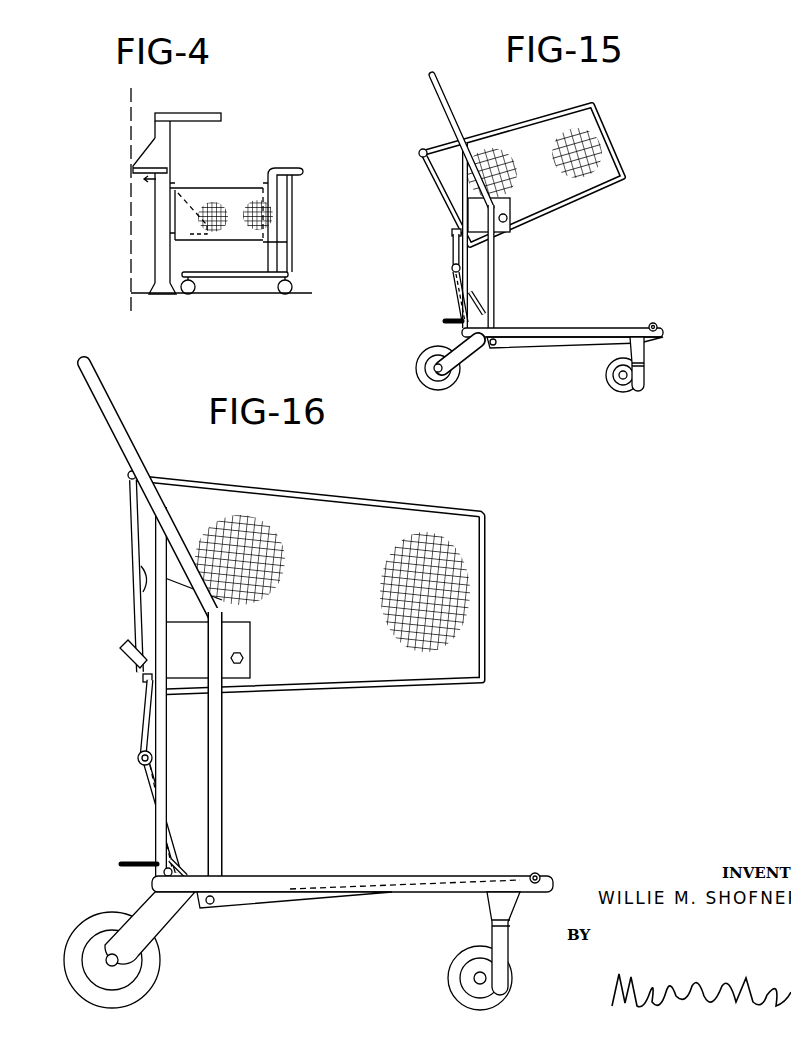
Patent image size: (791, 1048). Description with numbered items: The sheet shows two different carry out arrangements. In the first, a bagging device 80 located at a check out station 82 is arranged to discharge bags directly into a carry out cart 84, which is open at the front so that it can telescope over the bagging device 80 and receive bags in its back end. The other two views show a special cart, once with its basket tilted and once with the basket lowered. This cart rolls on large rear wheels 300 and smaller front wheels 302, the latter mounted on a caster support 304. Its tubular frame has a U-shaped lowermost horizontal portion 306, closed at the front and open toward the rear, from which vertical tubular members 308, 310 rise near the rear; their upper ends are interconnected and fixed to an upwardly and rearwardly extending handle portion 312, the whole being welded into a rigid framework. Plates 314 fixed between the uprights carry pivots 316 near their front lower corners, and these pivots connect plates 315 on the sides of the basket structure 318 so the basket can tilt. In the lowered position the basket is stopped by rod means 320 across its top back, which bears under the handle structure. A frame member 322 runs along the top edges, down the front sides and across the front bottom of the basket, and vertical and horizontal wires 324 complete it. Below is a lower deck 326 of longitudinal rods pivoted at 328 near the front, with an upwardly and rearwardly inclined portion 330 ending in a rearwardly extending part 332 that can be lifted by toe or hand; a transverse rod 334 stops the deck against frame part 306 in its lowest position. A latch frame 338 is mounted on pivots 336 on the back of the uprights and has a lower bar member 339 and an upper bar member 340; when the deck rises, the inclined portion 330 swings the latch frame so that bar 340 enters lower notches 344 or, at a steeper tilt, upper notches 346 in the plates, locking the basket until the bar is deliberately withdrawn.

In FIG. 4, the bagging device 80 is at (170, 184).
In FIG. 4, the check out station 82 is at (221, 92).
In FIG. 4, the carry out cart 84 is at (229, 190).
In FIG. 15, the rear wheels 300 is at (448, 389).
In FIG. 16, the rear wheels 300 is at (150, 973).
In FIG. 15, the front wheels 302 is at (620, 392).
In FIG. 16, the front wheels 302 is at (455, 976).
In FIG. 15, the caster support 304 is at (641, 368).
In FIG. 16, the caster support 304 is at (492, 936).
In FIG. 15, the lowermost horizontal portion 306 is at (560, 328).
In FIG. 16, the lowermost horizontal portion 306 is at (338, 877).
In FIG. 15, the vertical tubular member 308 is at (470, 258).
In FIG. 16, the vertical tubular member 308 is at (168, 737).
In FIG. 15, the vertical tubular member 310 is at (497, 280).
In FIG. 16, the vertical tubular member 310 is at (223, 779).
In FIG. 15, the handle portion 312 is at (436, 104).
In FIG. 16, the handle portion 312 is at (113, 431).
In FIG. 15, the plates 314 is at (453, 198).
In FIG. 16, the plates 314 is at (187, 612).
In FIG. 15, the plates 315 is at (478, 212).
In FIG. 16, the plates 315 is at (252, 676).
In FIG. 15, the pivots 316 is at (510, 206).
In FIG. 16, the pivots 316 is at (244, 655).
In FIG. 15, the basket structure 318 is at (522, 159).
In FIG. 16, the basket structure 318 is at (304, 573).
In FIG. 15, the rod means 320 is at (421, 148).
In FIG. 16, the rod means 320 is at (126, 475).
In FIG. 15, the frame member 322 is at (517, 120).
In FIG. 16, the frame member 322 is at (489, 536).
In FIG. 15, the wires 324 is at (600, 140).
In FIG. 16, the wires 324 is at (445, 588).
In FIG. 15, the lower deck 326 is at (528, 349).
In FIG. 16, the lower deck 326 is at (284, 899).
In FIG. 15, the pivotal support 328 is at (656, 324).
In FIG. 16, the pivotal support 328 is at (540, 872).
In FIG. 15, the inclined portion 330 is at (488, 351).
In FIG. 16, the inclined portion 330 is at (178, 878).
In FIG. 15, the rearwardly extending part 332 is at (455, 325).
In FIG. 16, the rearwardly extending part 332 is at (127, 858).
In FIG. 16, the transverse rod 334 is at (164, 874).
In FIG. 15, the pivots 336 is at (452, 273).
In FIG. 16, the pivots 336 is at (140, 767).
In FIG. 15, the latch frame 338 is at (452, 256).
In FIG. 16, the latch frame 338 is at (138, 732).
In FIG. 15, the lower bar member 339 is at (486, 313).
In FIG. 16, the lower bar member 339 is at (184, 866).
In FIG. 15, the upper bar member 340 is at (452, 233).
In FIG. 16, the upper bar member 340 is at (143, 680).
In FIG. 16, the lower notches 344 is at (137, 650).
In FIG. 16, the upper notches 346 is at (139, 566).